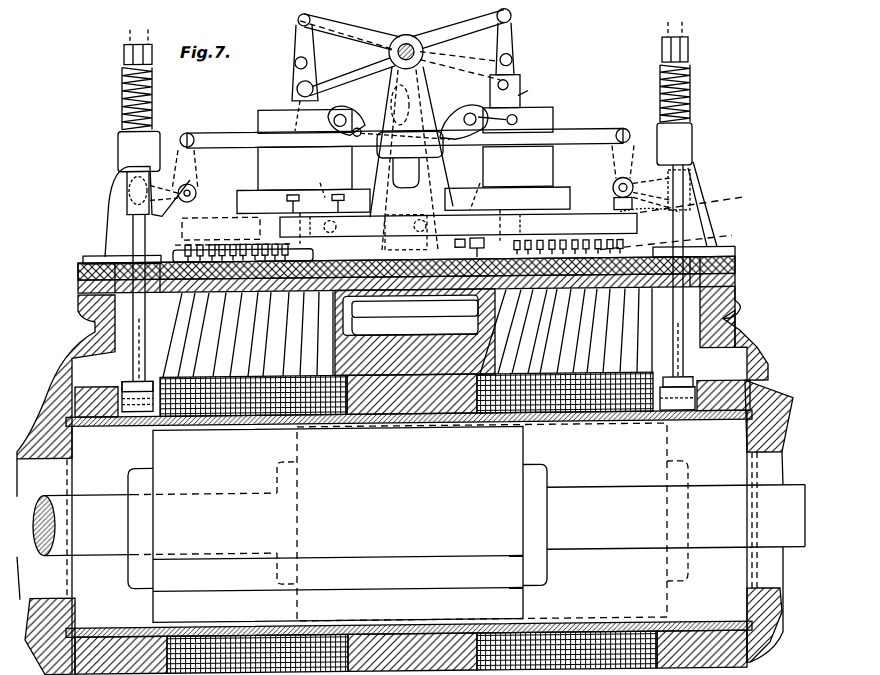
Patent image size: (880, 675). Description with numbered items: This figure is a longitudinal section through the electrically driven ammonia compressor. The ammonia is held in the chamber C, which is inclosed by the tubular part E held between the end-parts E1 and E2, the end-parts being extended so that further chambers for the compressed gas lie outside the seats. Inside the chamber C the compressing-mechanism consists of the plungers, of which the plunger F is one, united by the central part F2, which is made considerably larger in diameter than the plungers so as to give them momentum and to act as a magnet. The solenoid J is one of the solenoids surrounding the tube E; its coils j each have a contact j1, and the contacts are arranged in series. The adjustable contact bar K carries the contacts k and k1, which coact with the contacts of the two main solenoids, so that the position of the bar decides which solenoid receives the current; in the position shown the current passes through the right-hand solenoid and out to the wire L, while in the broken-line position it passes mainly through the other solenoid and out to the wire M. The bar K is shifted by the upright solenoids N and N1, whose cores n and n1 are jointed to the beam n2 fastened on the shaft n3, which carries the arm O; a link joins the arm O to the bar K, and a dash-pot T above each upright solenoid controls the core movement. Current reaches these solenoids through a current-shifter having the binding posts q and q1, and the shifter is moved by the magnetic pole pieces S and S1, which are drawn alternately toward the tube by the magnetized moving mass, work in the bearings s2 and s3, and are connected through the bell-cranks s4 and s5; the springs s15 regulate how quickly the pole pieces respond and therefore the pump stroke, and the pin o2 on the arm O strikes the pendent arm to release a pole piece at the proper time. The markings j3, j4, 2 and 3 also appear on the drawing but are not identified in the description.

The tubular part E is at (735, 415).
The end-part E1 is at (57, 354).
The end-part E2 is at (757, 351).
The chamber C is at (409, 542).
The plunger F is at (155, 524).
The central part F2 is at (466, 522).
The solenoid J is at (262, 418).
The coil j is at (300, 237).
The contact j1 is at (625, 280).
The grid band j3 is at (406, 520).
The lower grid connection j4 is at (625, 640).
The center hub block 2 is at (415, 352).
The small stud 3 is at (472, 241).
The magnetic pole piece S is at (137, 420).
The magnetic pole piece S1 is at (680, 404).
The spring s15 is at (125, 99).
The bearing s2 is at (125, 148).
The bearing s3 is at (690, 98).
The bell-crank s4 is at (152, 163).
The bell-crank s5 is at (612, 189).
The wire L is at (697, 200).
The contact k is at (243, 272).
The contact k1 is at (679, 233).
The upright solenoid N is at (263, 166).
The upright solenoid N1 is at (547, 170).
The dash-pot T is at (257, 113).
The wire M is at (280, 203).
The binding post q is at (312, 206).
The binding post q1 is at (491, 192).
The adjustable contact bar K is at (458, 201).
The arm O is at (408, 158).
The pin o2 is at (504, 114).
The core n is at (290, 110).
The core n1 is at (536, 85).
The beam n2 is at (466, 54).
The shaft n3 is at (395, 41).